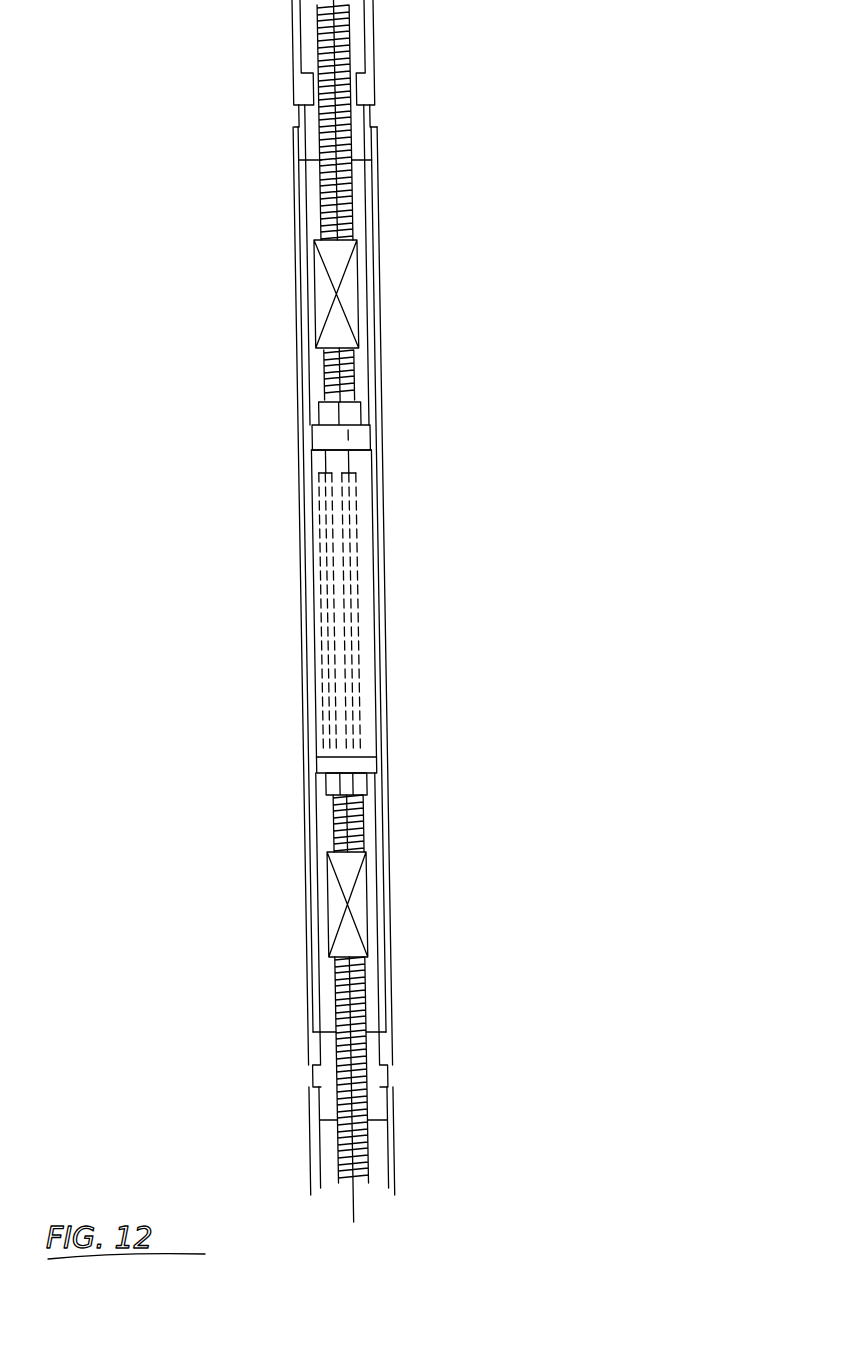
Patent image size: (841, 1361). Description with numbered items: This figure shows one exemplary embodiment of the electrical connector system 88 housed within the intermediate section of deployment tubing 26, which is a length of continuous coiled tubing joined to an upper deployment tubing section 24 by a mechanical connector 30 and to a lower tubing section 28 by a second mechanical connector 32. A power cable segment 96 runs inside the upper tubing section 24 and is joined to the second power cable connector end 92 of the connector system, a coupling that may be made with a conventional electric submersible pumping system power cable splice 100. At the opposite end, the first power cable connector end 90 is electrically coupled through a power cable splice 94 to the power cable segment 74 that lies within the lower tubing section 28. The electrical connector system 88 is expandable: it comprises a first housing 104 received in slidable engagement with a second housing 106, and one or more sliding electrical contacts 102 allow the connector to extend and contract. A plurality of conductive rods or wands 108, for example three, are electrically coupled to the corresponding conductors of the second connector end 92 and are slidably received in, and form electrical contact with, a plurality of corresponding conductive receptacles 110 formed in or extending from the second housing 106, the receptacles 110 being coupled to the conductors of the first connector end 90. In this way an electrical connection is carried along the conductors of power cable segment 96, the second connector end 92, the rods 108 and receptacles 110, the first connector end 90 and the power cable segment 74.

The deployment tubing section 24 is at (373, 40).
The intermediate tubing section 26 is at (385, 832).
The lower tubing section 28 is at (390, 1172).
The mechanical connector 30 is at (398, 106).
The mechanical connector 32 is at (401, 1066).
The power cable segment 74 is at (318, 1153).
The electrical connector system 88 is at (402, 474).
The first power cable connector end 90 is at (335, 822).
The second power cable connector end 92 is at (330, 375).
The power cable splice 94 is at (360, 912).
The power cable segment 96 is at (356, 192).
The power cable splice 100 is at (345, 300).
The sliding electrical contacts 102 is at (367, 680).
The first housing 104 is at (383, 430).
The second housing 106 is at (372, 613).
The conductive rods 108 is at (330, 465).
The receptacles 110 is at (360, 752).